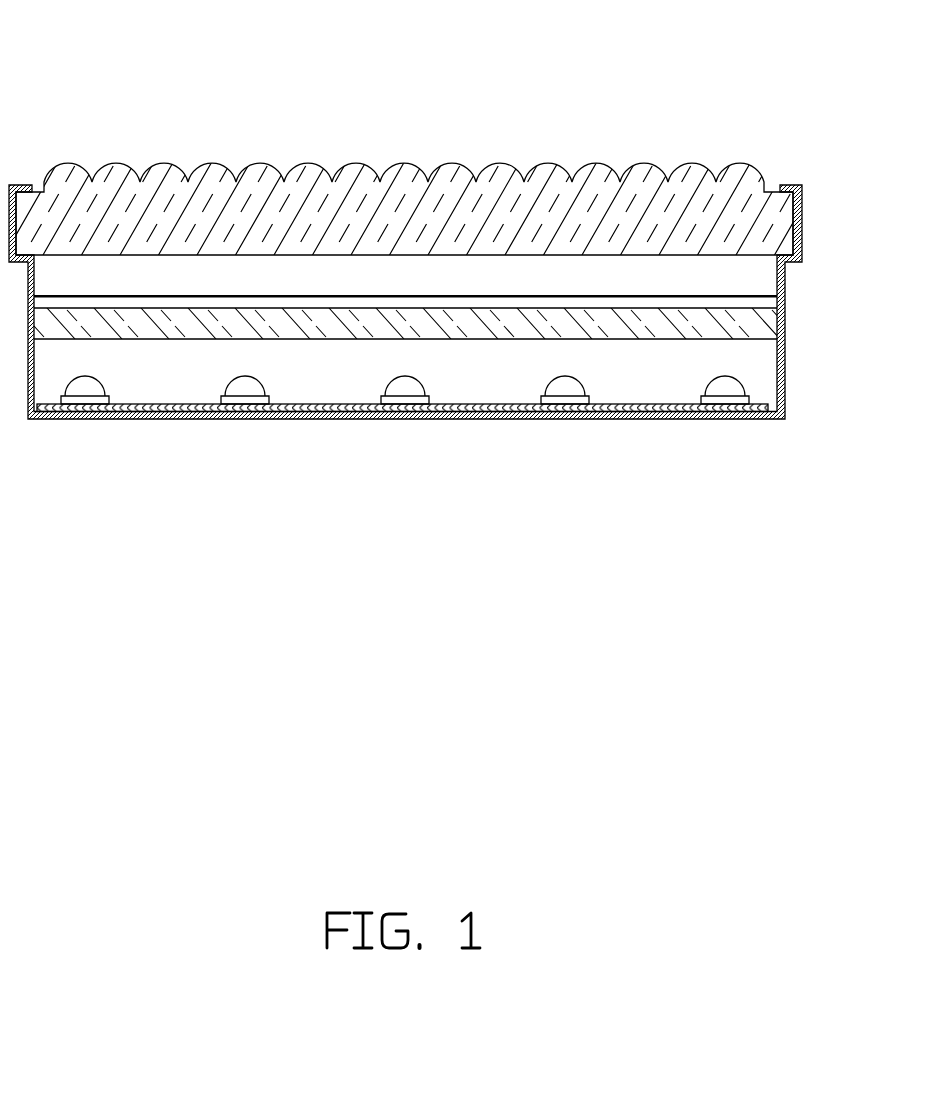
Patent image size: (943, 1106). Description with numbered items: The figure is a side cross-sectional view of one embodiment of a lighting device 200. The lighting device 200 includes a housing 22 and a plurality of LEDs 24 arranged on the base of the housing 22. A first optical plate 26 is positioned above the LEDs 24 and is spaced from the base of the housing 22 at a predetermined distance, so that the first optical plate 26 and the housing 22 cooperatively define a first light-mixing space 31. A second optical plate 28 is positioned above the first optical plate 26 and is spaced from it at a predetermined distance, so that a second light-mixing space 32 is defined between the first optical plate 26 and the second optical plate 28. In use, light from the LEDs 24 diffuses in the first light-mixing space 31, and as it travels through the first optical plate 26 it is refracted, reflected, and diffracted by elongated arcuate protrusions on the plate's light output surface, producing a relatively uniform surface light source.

The lighting device 200 is at (178, 90).
The housing 22 is at (783, 367).
The LEDs 24 is at (750, 400).
The first optical plate 26 is at (757, 318).
The second optical plate 28 is at (778, 208).
The first light-mixing space 31 is at (655, 373).
The second light-mixing space 32 is at (760, 278).